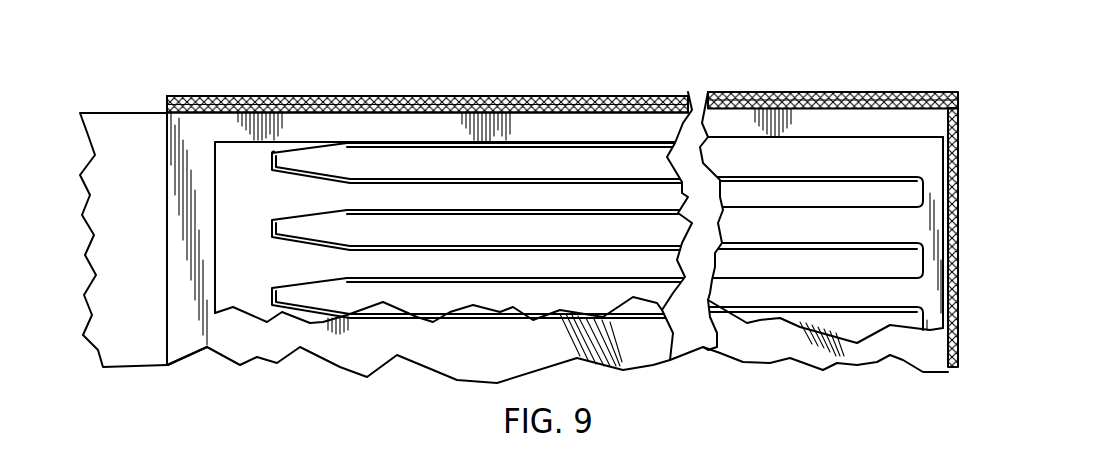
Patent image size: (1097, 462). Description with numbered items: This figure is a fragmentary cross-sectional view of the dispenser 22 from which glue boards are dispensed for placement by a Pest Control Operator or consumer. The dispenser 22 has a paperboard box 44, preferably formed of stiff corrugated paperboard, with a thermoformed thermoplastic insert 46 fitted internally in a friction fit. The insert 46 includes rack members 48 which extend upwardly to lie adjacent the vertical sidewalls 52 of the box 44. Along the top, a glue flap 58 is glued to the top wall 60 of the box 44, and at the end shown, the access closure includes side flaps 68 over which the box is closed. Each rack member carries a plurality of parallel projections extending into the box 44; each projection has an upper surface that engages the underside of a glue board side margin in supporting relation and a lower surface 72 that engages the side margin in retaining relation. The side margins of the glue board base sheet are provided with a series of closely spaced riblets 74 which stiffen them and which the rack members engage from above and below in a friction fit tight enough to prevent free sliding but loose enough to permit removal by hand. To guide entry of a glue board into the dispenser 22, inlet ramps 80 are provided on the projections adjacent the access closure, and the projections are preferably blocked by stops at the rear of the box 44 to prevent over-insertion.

The dispenser 22 is at (760, 70).
The box 44 is at (252, 96).
The insert 46 is at (214, 198).
The rack member 48 is at (220, 280).
The vertical sidewall 52 is at (198, 128).
The glue flap 58 is at (422, 95).
The top wall 60 is at (818, 110).
The side flap 68 is at (125, 150).
The lower surface 72 is at (503, 250).
The riblet 74 is at (563, 186).
The inlet ramp 80 is at (307, 212).